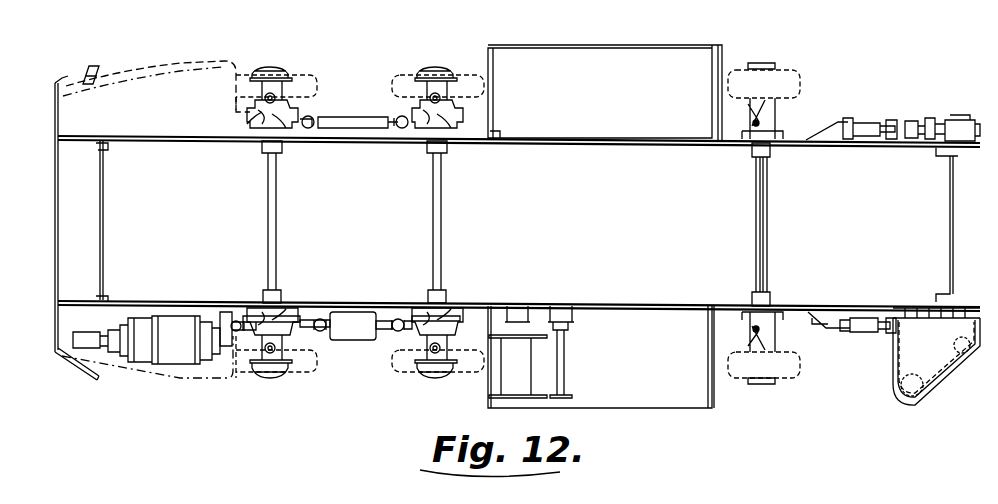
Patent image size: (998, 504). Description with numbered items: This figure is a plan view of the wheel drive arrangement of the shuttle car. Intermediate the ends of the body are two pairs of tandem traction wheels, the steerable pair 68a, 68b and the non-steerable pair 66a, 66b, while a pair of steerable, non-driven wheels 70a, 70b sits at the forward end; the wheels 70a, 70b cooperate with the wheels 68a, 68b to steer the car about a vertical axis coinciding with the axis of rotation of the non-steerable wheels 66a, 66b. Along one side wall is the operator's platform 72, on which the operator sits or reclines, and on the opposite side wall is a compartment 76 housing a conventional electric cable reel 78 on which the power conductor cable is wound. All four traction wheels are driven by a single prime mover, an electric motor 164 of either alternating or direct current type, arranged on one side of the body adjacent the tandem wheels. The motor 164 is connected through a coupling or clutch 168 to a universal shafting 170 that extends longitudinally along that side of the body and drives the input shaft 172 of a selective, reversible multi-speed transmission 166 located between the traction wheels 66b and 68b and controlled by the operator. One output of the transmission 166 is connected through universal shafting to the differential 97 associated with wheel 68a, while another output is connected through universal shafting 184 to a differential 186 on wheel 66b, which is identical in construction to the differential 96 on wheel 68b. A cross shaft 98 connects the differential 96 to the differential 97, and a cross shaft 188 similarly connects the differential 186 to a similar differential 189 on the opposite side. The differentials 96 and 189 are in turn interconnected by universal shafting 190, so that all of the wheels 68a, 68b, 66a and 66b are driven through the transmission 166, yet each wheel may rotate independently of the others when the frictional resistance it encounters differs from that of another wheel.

The operator's platform 72 is at (605, 93).
The compartment 76 is at (664, 408).
The electric cable reel 78 is at (520, 382).
The traction wheel 68a is at (280, 72).
The traction wheel 68b is at (292, 370).
The traction wheel 66a is at (434, 72).
The traction wheel 66b is at (422, 370).
The steerable non-driven wheel 70a is at (800, 76).
The steerable non-driven wheel 70b is at (798, 380).
The differential 96 is at (268, 130).
The differential 97 is at (258, 318).
The cross shaft 98 is at (272, 238).
The electric motor 164 is at (170, 362).
The selective reversible multi-speed transmission 166 is at (362, 338).
The coupling or clutch 168 is at (205, 314).
The universal shafting 170 is at (282, 322).
The input shaft 172 is at (320, 320).
The universal shafting 184 is at (396, 320).
The differential 186 is at (448, 320).
The cross shaft 188 is at (440, 210).
The differential 189 is at (444, 126).
The universal shafting 190 is at (352, 128).